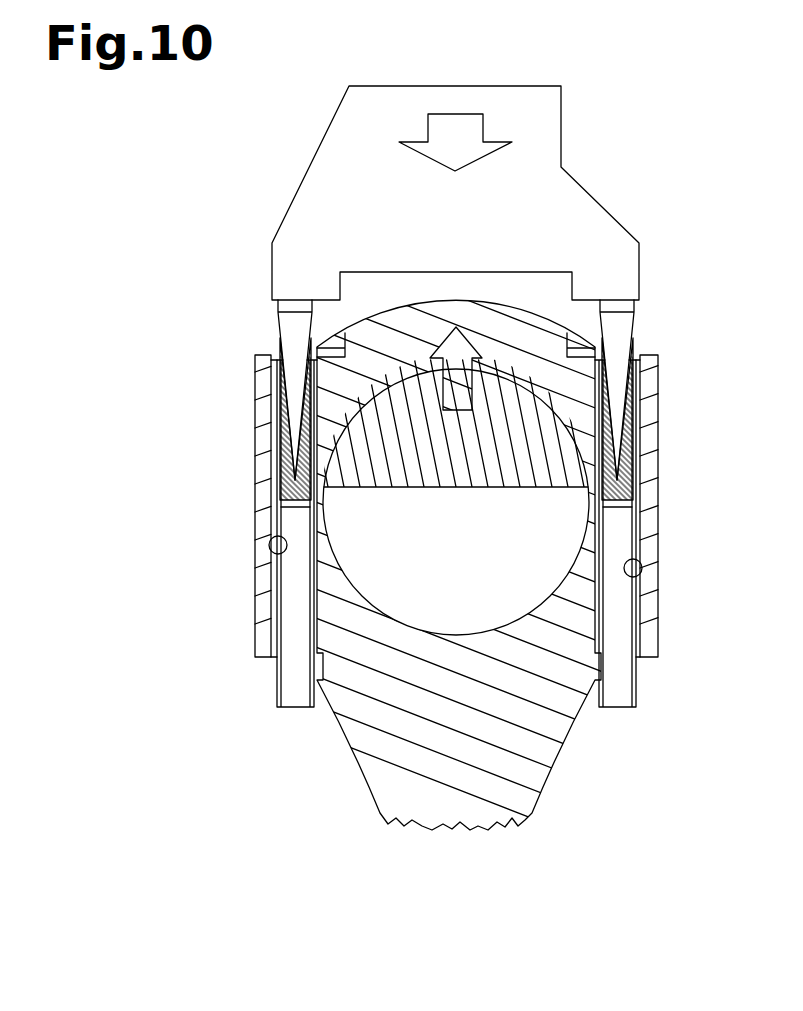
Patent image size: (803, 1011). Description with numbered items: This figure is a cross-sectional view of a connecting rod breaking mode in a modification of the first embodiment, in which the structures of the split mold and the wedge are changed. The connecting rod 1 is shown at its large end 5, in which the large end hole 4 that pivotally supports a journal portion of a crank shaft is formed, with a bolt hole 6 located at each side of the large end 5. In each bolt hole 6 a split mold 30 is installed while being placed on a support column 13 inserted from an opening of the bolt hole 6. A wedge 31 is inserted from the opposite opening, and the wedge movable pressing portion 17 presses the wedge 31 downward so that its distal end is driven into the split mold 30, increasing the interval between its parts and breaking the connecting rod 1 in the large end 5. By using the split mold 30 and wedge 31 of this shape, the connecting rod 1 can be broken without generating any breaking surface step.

The connecting rod 1 is at (362, 770).
The large end hole 4 is at (542, 603).
The large end 5 is at (507, 306).
The bolt hole 6 is at (270, 549).
The support column 13 is at (277, 681).
The wedge movable pressing portion 17 is at (613, 215).
The split mold 30 is at (276, 506).
The wedge 31 is at (280, 330).